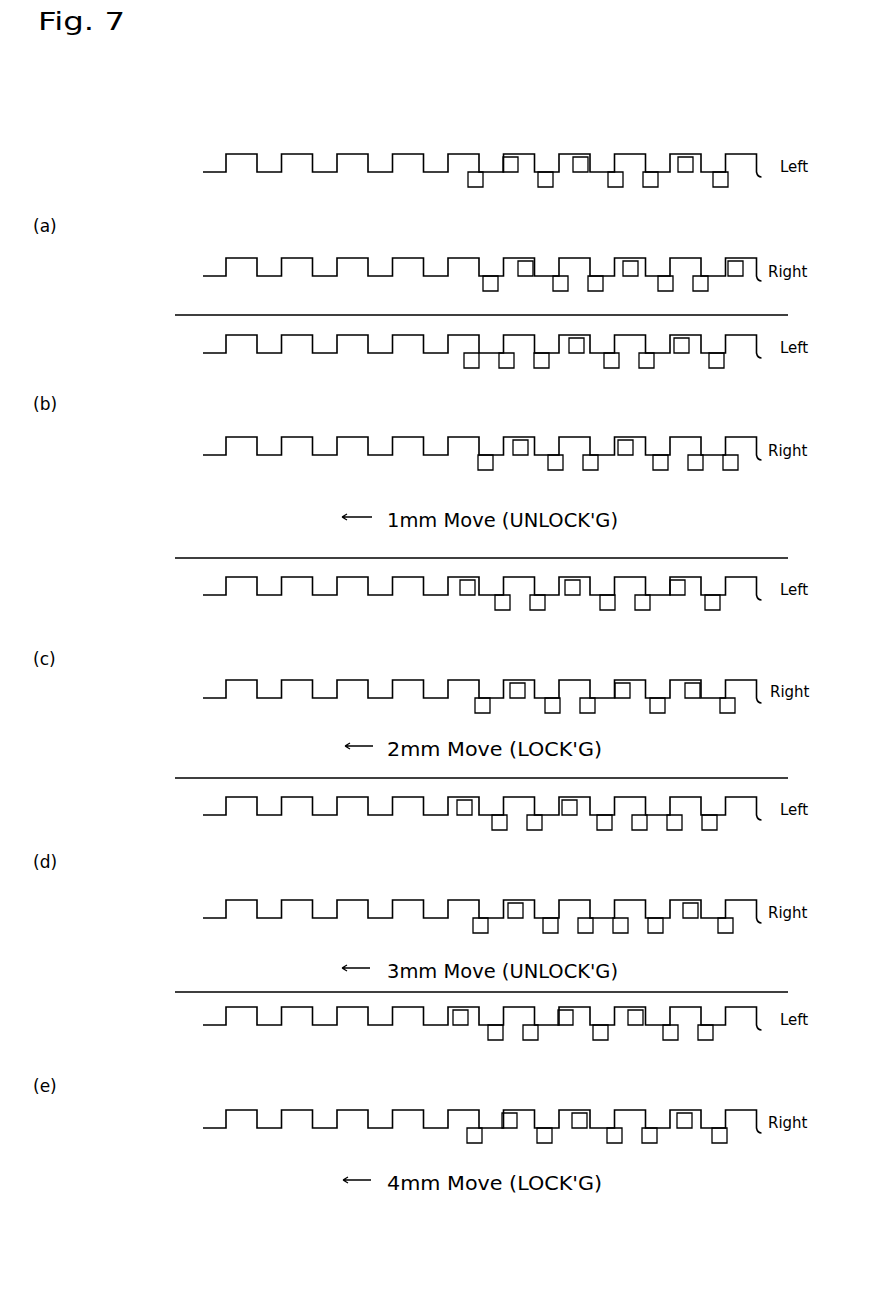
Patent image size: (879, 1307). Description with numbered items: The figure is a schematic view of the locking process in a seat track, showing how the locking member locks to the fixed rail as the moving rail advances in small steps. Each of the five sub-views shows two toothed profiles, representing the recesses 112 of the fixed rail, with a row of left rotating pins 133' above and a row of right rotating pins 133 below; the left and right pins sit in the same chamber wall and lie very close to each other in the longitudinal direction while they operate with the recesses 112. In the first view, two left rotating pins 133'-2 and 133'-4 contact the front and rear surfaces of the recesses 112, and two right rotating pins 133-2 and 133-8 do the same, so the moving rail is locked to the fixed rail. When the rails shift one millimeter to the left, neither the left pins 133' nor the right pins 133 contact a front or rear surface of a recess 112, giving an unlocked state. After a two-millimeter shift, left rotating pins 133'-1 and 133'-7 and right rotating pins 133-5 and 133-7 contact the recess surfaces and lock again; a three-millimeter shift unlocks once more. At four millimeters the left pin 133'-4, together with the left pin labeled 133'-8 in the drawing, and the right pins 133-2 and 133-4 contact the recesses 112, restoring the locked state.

The recess 112 is at (229, 167).
The right rotating pin 133 is at (570, 673).
The left rotating pin 133' is at (550, 553).
The right rotating pin 133-2 is at (522, 262).
The right rotating pin 133-4 is at (586, 1120).
The right rotating pin 133-5 is at (622, 683).
The right rotating pin 133-7 is at (697, 688).
The right rotating pin 133-8 is at (732, 262).
The left rotating pin 133'-1 is at (414, 616).
The left rotating pin 133'-2 is at (565, 119).
The left rotating pin 133'-4 is at (621, 597).
The left rotating pin 133'-7 is at (675, 623).
The left rotating pin 133'-8 is at (693, 1040).